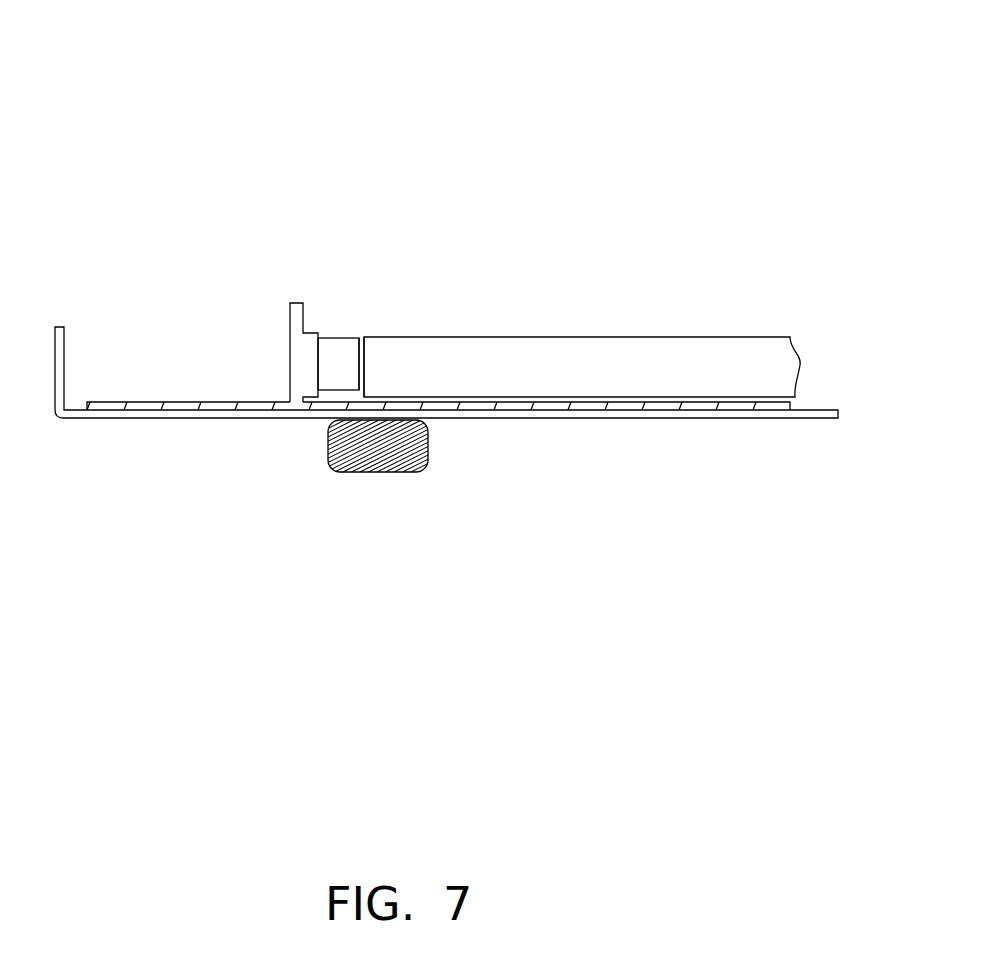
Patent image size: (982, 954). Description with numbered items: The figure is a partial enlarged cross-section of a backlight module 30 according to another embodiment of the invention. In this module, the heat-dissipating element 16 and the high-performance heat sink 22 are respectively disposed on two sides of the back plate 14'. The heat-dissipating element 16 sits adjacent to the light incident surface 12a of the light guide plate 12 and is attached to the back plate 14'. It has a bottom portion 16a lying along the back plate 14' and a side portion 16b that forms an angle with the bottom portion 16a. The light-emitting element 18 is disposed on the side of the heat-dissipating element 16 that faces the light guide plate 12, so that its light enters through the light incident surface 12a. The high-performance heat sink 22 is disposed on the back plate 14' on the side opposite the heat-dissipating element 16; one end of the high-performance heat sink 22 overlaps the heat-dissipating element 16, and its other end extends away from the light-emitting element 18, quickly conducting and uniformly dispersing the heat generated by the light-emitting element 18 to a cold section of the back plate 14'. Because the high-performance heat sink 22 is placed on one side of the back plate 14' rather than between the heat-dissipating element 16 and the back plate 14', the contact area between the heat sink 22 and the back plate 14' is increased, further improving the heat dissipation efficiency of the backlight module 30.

The backlight module 30 is at (609, 33).
The light guide plate 12 is at (652, 358).
The light incident surface 12a is at (360, 340).
The back plate 14' is at (446, 446).
The heat-dissipating element 16 is at (438, 316).
The bottom portion 16a is at (471, 414).
The side portion 16b is at (292, 325).
The light-emitting element 18 is at (333, 350).
The high-performance heat sink 22 is at (392, 457).